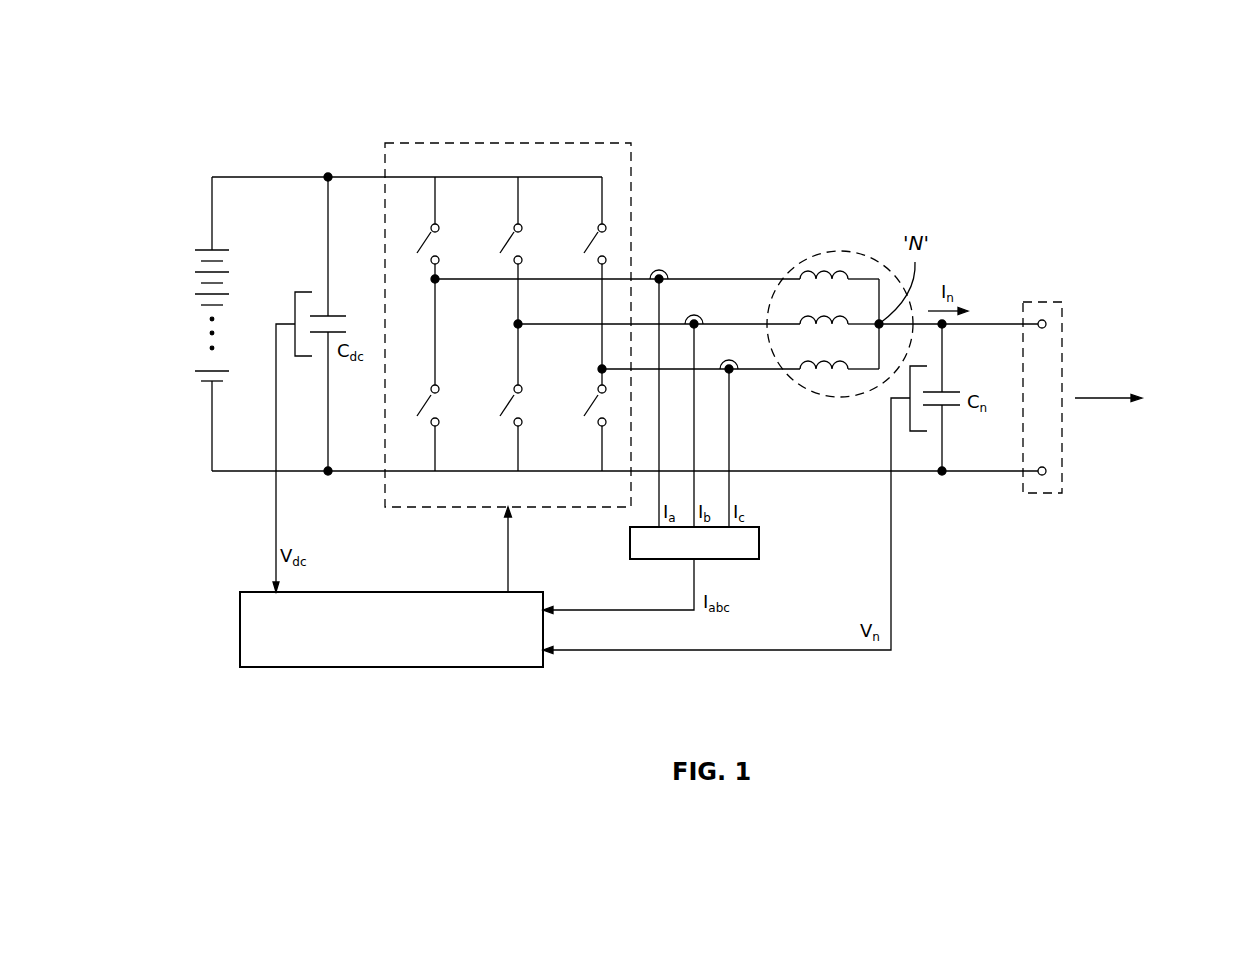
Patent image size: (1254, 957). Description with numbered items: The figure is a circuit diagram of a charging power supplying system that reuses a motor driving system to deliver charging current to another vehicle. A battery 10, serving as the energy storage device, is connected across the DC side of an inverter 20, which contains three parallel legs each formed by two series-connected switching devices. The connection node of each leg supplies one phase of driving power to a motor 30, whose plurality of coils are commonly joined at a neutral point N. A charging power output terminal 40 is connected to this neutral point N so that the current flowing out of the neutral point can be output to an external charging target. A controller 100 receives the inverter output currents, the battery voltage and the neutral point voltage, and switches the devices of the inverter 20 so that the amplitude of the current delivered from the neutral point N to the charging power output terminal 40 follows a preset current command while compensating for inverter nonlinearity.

The battery 10 is at (198, 329).
The inverter 20 is at (631, 213).
The motor 30 is at (841, 250).
The charging power output terminal 40 is at (1043, 302).
The controller 100 is at (410, 667).